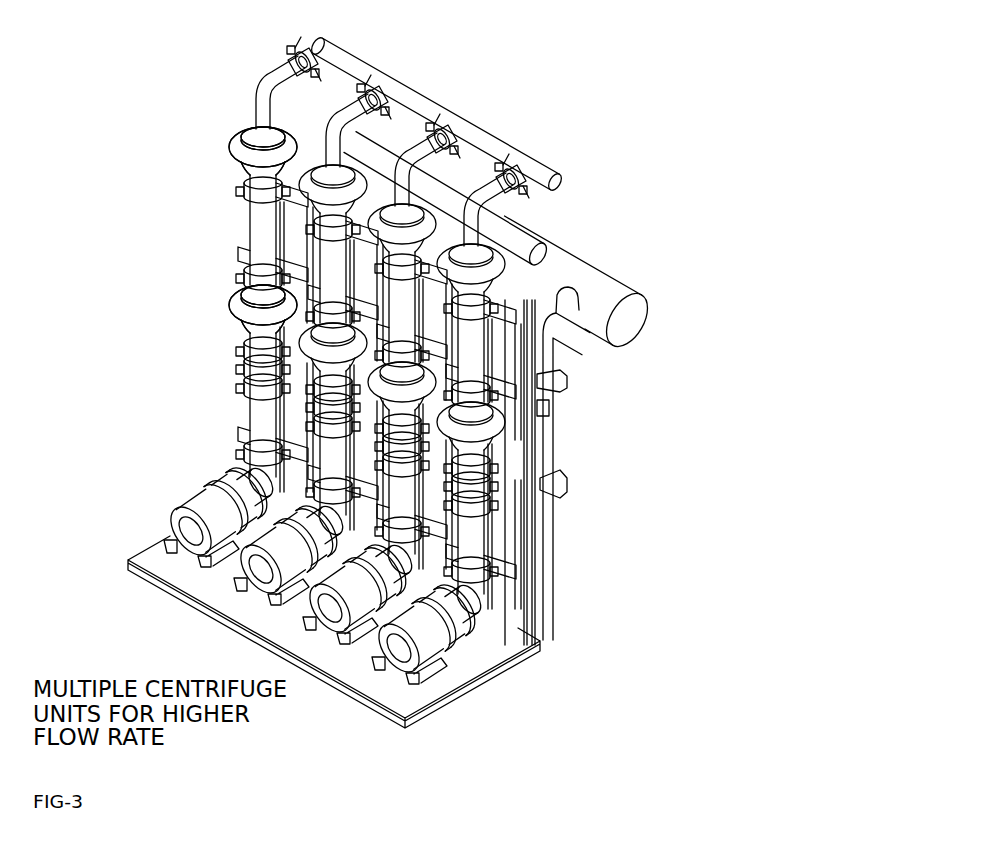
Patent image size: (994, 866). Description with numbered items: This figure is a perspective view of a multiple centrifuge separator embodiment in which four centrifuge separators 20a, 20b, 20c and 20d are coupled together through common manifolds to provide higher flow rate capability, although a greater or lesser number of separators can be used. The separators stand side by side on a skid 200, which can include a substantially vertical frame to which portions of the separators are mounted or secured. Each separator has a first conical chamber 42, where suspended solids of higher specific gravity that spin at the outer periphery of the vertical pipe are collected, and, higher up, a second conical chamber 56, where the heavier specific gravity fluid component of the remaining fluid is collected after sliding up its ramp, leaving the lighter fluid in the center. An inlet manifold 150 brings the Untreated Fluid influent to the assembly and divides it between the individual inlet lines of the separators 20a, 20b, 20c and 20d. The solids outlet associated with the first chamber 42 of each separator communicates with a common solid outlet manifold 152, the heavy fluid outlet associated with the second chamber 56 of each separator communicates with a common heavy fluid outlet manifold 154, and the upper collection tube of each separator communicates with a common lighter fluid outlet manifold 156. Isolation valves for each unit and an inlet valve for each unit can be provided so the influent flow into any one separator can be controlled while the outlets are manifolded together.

The centrifuge separator 20a is at (220, 442).
The centrifuge separator 20b is at (215, 578).
The centrifuge separator 20c is at (327, 630).
The centrifuge separator 20d is at (452, 667).
The first conical chamber 42 is at (243, 312).
The second conical chamber 56 is at (243, 150).
The inlet manifold 150 is at (627, 323).
The common solid outlet manifold 152 is at (549, 408).
The common heavy fluid outlet manifold 154 is at (513, 221).
The common lighter fluid outlet manifold 156 is at (483, 143).
The skid 200 is at (520, 663).